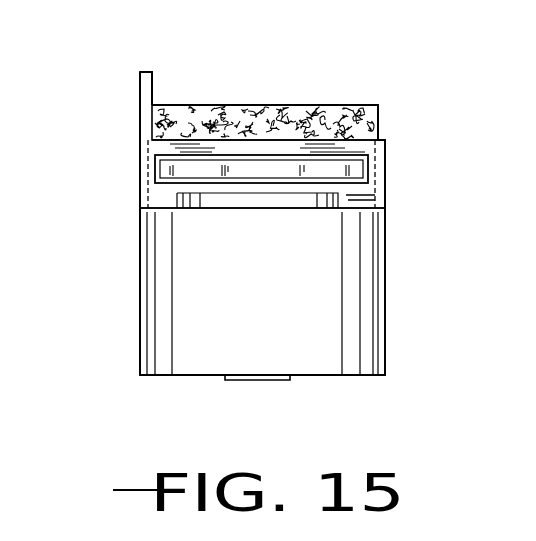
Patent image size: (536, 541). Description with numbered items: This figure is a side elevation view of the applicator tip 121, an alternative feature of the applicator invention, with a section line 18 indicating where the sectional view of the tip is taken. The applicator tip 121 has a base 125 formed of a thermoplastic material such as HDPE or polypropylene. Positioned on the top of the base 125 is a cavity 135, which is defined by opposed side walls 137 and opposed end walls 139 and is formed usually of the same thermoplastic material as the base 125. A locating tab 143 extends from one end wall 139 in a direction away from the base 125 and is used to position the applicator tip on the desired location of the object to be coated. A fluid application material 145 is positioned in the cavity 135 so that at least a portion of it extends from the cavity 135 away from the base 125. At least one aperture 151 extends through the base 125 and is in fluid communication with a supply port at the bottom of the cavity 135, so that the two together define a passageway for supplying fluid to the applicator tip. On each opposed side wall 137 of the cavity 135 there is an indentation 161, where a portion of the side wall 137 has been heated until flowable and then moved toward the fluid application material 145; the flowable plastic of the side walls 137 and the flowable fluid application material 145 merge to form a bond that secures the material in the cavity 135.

The section line 18- 18 is at (263, 82).
The applicator tip 121 is at (292, 81).
The base 125 is at (385, 342).
The cavity 135 is at (378, 140).
The side walls 137 is at (383, 192).
The end walls 139 is at (140, 167).
The locating tab 143 is at (140, 88).
The fluid application material 145 is at (328, 105).
The aperture 151 is at (278, 380).
The indentation 161 is at (185, 170).